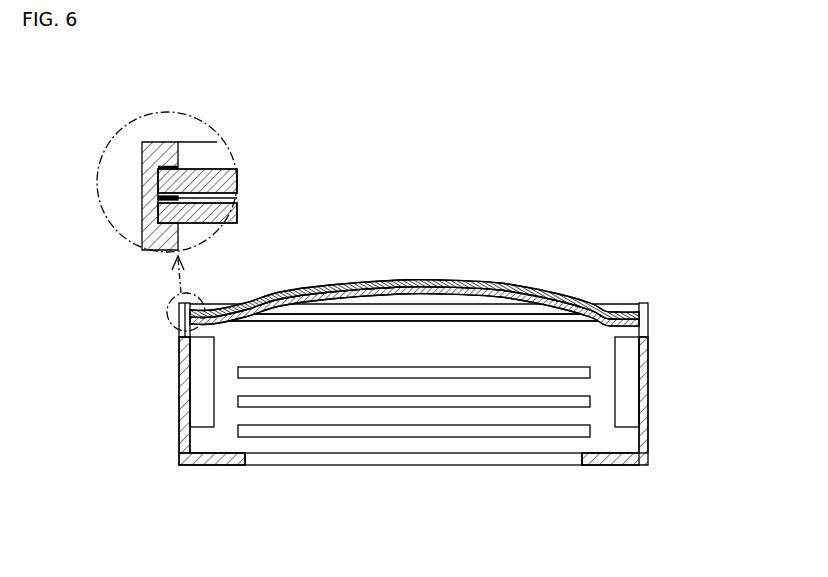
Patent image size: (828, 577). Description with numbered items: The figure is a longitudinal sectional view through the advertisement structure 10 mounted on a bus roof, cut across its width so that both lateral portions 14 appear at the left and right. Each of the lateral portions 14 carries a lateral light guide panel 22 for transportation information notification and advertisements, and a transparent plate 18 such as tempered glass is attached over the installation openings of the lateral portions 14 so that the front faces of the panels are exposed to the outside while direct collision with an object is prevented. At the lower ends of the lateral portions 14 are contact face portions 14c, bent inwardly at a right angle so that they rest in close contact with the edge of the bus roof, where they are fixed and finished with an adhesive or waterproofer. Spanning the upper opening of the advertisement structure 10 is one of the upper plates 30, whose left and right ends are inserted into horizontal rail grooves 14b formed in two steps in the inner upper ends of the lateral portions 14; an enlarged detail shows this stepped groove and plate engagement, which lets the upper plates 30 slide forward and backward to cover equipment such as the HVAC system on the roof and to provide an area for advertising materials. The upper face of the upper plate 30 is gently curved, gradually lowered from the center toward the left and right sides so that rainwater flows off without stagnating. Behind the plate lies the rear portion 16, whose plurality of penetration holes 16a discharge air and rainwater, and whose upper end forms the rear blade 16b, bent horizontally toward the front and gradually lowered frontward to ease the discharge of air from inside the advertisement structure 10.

The advertisement structure 10 is at (567, 279).
The lateral portions 14 is at (153, 237).
The horizontal rail grooves 14b is at (167, 160).
The contact face portions 14c is at (218, 463).
The rear portion 16 is at (303, 342).
The penetration holes 16a is at (432, 380).
The rear blade 16b is at (398, 308).
The transparent plate 18 is at (180, 382).
The lateral light guide panels 22 is at (198, 430).
The upper plates 30 is at (223, 177).